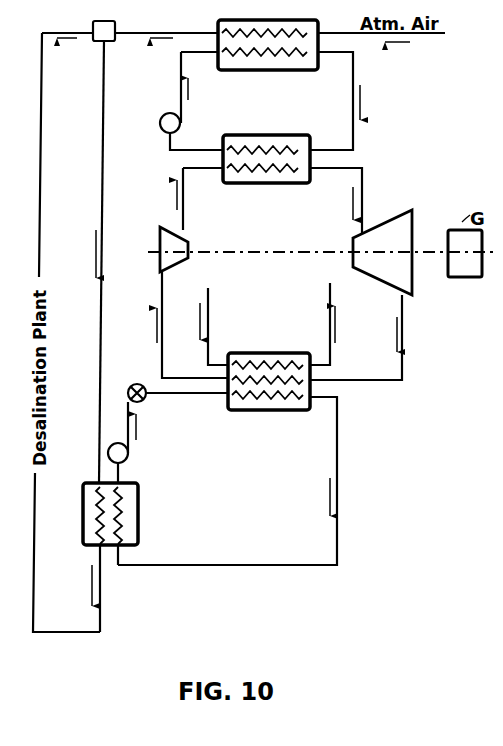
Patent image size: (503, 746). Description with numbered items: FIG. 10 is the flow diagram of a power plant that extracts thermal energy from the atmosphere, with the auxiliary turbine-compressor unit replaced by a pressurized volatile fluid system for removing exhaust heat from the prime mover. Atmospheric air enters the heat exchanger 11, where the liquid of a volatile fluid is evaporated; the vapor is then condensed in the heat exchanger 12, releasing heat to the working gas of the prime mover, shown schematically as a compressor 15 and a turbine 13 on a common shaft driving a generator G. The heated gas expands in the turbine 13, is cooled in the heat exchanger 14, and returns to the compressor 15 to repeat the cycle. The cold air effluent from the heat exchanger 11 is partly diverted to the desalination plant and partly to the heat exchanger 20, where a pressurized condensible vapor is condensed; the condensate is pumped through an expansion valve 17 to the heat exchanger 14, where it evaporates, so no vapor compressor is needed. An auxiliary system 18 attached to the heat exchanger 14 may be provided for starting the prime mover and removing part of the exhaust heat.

The heat exchanger 11 is at (240, 17).
The heat exchanger 12 is at (243, 135).
The turbine 13 is at (387, 222).
The heat exchanger 14 is at (273, 353).
The compressor 15 is at (157, 232).
The expansion valve 17 is at (147, 401).
The auxiliary system 18 is at (208, 310).
The heat exchanger 20 is at (140, 510).